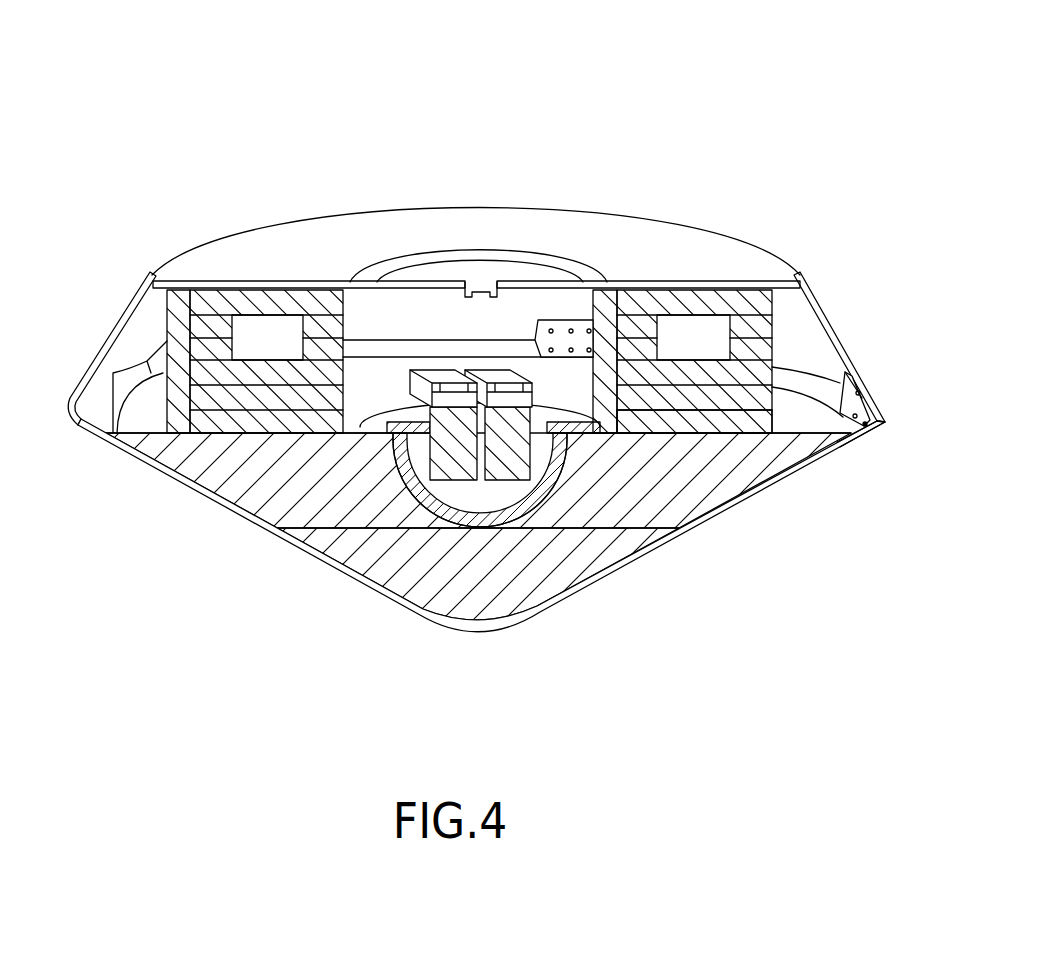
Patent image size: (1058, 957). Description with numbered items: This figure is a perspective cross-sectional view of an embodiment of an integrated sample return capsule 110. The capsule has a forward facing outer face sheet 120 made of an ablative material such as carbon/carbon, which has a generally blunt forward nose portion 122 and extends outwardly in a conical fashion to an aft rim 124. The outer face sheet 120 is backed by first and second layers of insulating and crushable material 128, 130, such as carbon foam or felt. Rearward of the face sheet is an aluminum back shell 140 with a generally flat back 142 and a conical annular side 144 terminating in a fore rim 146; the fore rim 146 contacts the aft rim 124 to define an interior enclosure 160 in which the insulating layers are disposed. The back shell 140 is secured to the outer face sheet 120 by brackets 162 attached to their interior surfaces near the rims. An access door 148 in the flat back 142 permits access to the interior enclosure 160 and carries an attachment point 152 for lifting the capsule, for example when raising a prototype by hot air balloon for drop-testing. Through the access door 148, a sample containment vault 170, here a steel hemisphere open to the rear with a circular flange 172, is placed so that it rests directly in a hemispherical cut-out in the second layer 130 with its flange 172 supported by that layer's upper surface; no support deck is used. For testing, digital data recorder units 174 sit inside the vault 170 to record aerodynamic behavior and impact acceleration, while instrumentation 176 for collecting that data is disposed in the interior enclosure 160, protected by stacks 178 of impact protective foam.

The integrated sample return capsule 110 is at (604, 86).
The forward facing outer face sheet 120 is at (200, 493).
The blunt forward nose portion 122 is at (487, 630).
The aft rim 124 is at (878, 423).
The first layer of insulating and crushable material 128 is at (375, 588).
The second layer of insulating and crushable material 130 is at (215, 463).
The back shell 140 is at (232, 230).
The flat back 142 is at (317, 238).
The conical annular side 144 is at (102, 358).
The fore rim 146 is at (885, 420).
The access door 148 is at (432, 270).
The attachment point 152 is at (482, 283).
The interior enclosure 160 is at (452, 330).
The brackets 162 is at (157, 347).
The sample containment vault 170 is at (558, 482).
The circular flange 172 is at (383, 417).
The digital data recorder units 174 is at (463, 470).
The instrumentation 176 is at (712, 325).
The stacks of impact protective material 178 is at (740, 418).